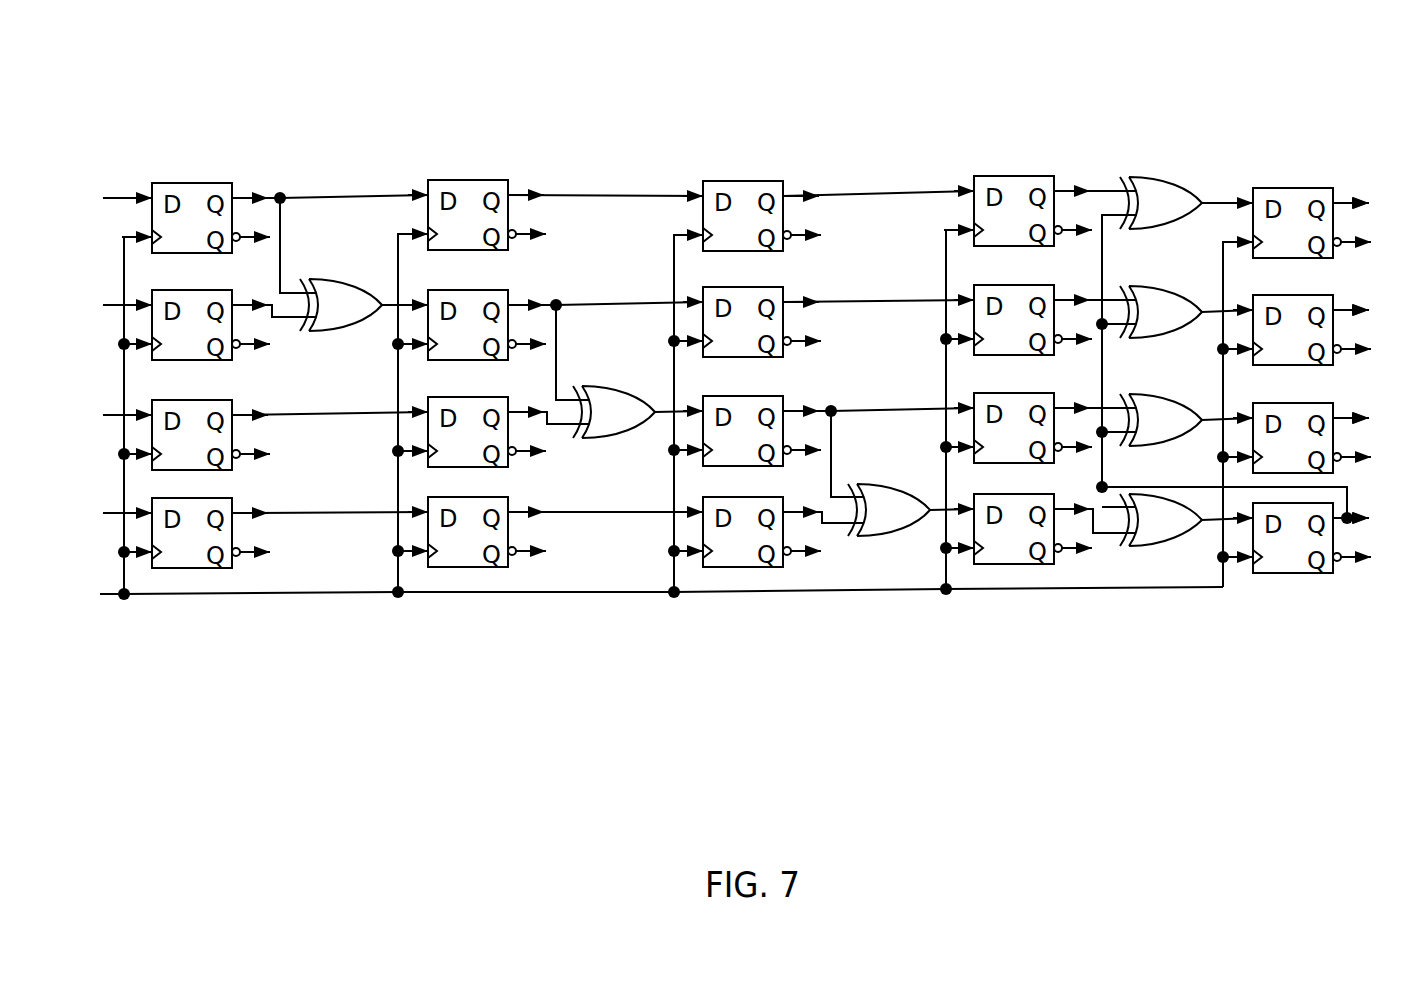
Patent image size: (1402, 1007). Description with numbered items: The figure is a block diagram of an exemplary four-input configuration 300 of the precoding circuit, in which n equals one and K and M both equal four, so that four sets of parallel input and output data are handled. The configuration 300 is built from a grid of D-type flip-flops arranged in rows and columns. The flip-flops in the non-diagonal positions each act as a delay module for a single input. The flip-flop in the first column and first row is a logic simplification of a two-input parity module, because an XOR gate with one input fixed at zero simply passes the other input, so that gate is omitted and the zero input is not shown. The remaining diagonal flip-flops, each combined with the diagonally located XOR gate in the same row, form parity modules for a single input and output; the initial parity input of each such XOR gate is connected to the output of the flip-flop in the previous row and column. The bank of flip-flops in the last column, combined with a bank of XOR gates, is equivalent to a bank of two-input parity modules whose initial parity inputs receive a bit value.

The four-input configuration 300 is at (1246, 50).